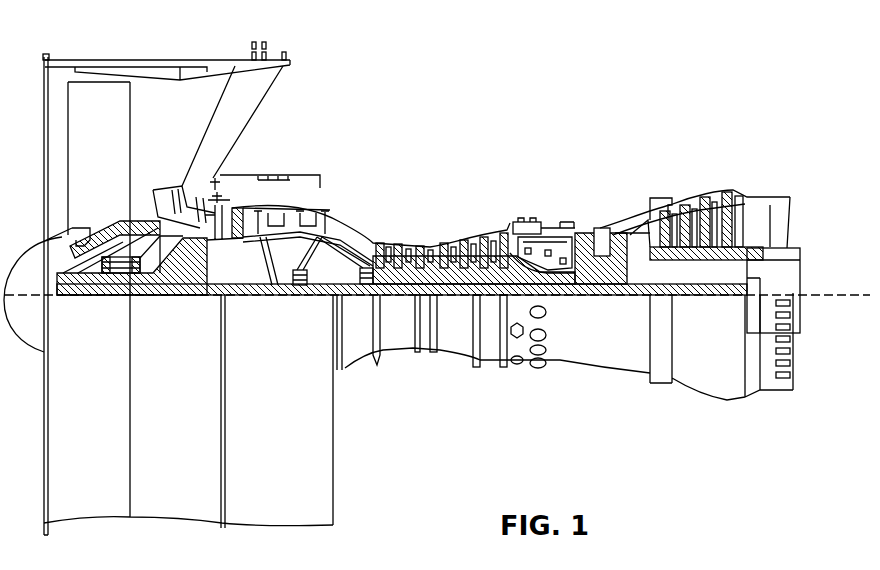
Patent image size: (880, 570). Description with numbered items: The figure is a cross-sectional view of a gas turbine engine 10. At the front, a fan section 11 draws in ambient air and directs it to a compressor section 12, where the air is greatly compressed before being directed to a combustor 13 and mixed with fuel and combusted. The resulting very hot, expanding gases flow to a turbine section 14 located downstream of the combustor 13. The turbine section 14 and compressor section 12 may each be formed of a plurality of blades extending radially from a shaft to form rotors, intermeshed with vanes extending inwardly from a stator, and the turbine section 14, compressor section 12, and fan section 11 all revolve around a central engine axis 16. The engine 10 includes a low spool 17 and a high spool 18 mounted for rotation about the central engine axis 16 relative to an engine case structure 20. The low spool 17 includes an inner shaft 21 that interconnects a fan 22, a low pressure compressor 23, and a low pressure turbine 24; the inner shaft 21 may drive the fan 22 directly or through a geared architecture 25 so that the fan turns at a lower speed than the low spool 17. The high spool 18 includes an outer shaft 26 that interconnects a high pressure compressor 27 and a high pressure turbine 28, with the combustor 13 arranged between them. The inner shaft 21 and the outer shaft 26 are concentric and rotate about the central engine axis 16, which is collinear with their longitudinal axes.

The gas turbine engine 10 is at (577, 90).
The fan section 11 is at (222, 48).
The compressor section 12 is at (230, 143).
The combustor 13 is at (590, 143).
The turbine section 14 is at (752, 143).
The central engine axis 16 is at (821, 291).
The low spool 17 is at (461, 299).
The high spool 18 is at (491, 266).
The engine case structure 20 is at (497, 364).
The inner shaft 21 is at (360, 298).
The fan 22 is at (109, 158).
The low pressure compressor 23 is at (280, 216).
The low pressure turbine 24 is at (700, 202).
The geared architecture 25 is at (189, 276).
The outer shaft 26 is at (541, 278).
The high pressure compressor 27 is at (443, 268).
The high pressure turbine 28 is at (599, 225).